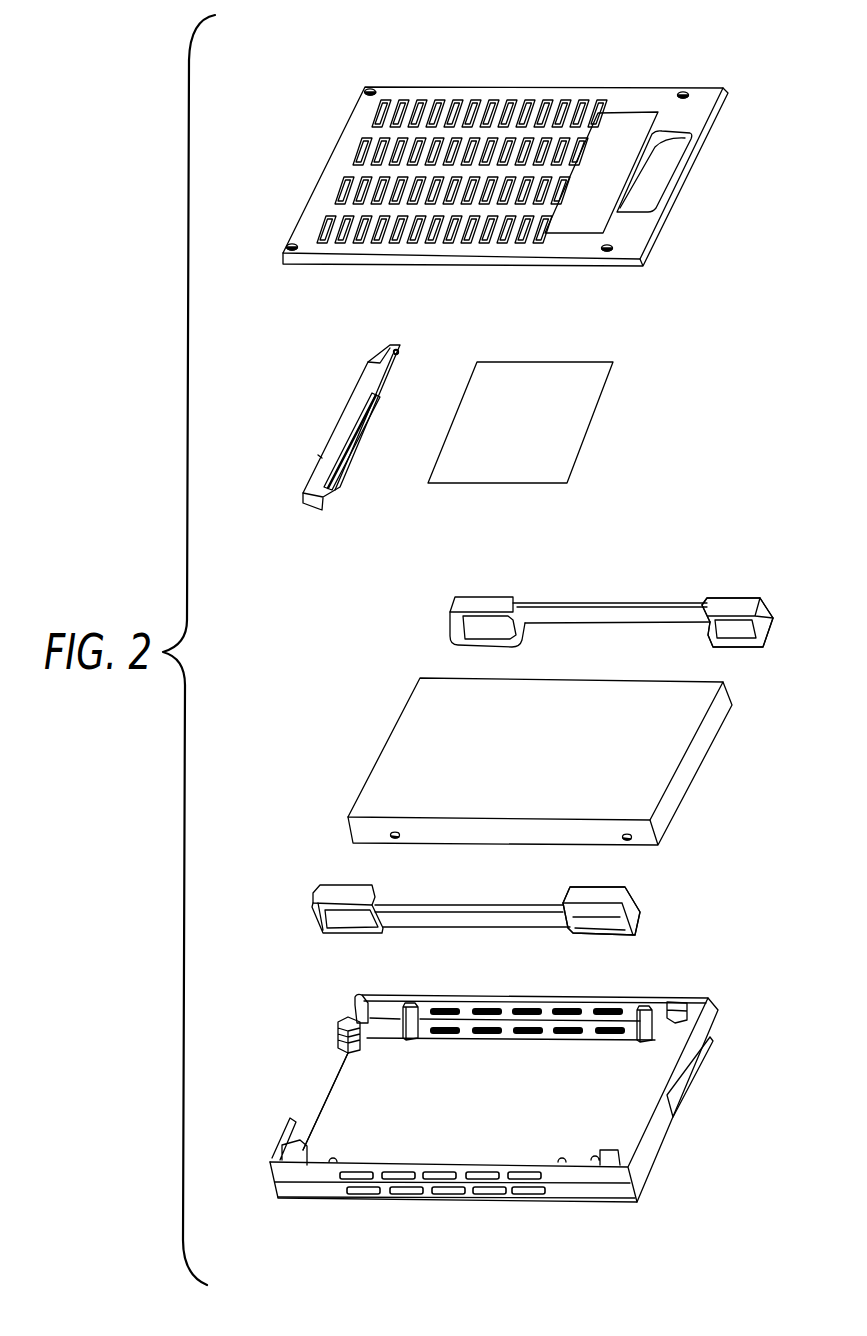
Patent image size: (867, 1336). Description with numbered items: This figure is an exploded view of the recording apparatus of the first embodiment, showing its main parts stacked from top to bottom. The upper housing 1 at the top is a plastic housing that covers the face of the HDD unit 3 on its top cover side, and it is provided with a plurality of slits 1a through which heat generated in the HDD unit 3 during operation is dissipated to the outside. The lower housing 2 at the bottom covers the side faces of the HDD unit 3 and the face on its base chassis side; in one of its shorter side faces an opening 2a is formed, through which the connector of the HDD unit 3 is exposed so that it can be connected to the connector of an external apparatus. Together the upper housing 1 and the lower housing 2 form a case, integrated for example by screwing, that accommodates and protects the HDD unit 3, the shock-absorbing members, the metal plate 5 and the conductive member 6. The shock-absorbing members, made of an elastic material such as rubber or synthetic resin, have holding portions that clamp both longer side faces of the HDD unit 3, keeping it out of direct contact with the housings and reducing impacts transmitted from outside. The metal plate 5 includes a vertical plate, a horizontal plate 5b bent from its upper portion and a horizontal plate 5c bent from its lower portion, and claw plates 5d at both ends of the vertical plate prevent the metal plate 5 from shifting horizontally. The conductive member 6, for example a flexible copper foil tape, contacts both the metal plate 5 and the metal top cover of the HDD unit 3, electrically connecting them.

The upper housing 1 is at (625, 147).
The slits 1a is at (427, 140).
The lower housing 2 is at (582, 1190).
The opening 2a is at (322, 1082).
The HDD unit 3 is at (397, 743).
The metal plate 5 is at (330, 388).
The horizontal plate 5b is at (377, 362).
The horizontal plate 5c is at (352, 467).
The claw plates 5d is at (402, 349).
The conductive member 6 is at (557, 417).